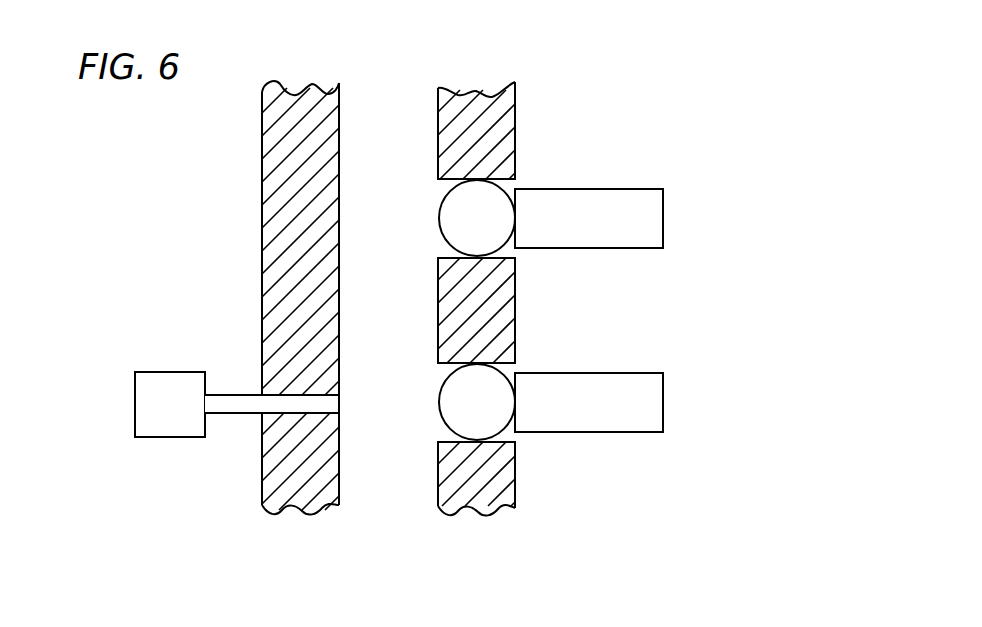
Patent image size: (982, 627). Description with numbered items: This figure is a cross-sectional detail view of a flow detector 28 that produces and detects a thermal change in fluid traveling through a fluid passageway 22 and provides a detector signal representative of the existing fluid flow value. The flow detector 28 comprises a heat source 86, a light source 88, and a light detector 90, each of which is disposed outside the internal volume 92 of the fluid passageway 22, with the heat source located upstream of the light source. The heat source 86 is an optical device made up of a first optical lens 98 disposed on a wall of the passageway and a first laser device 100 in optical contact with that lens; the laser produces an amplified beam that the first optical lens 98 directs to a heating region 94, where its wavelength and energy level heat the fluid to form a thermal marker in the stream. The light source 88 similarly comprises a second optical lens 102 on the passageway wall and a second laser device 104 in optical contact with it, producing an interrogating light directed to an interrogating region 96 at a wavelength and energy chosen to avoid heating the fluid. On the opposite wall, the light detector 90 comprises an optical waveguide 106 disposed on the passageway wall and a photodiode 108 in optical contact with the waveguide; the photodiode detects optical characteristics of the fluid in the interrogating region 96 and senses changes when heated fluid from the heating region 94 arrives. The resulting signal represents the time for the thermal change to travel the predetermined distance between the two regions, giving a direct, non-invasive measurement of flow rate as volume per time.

The fluid passageway 22 is at (439, 129).
The flow detector 28 is at (612, 293).
The heat source 86 is at (591, 149).
The light source 88 is at (572, 403).
The light detector 90 is at (185, 384).
The internal volume 92 is at (397, 107).
The heating region 94 is at (381, 224).
The interrogating region 96 is at (398, 426).
The first optical lens 98 is at (477, 218).
The first laser device 100 is at (613, 190).
The second optical lens 102 is at (477, 402).
The second laser device 104 is at (663, 400).
The optical waveguide 106 is at (237, 417).
The photodiode 108 is at (135, 402).